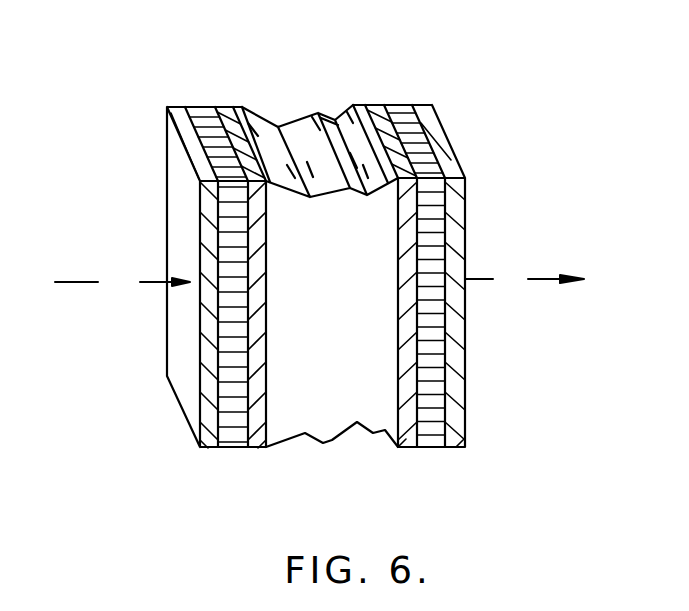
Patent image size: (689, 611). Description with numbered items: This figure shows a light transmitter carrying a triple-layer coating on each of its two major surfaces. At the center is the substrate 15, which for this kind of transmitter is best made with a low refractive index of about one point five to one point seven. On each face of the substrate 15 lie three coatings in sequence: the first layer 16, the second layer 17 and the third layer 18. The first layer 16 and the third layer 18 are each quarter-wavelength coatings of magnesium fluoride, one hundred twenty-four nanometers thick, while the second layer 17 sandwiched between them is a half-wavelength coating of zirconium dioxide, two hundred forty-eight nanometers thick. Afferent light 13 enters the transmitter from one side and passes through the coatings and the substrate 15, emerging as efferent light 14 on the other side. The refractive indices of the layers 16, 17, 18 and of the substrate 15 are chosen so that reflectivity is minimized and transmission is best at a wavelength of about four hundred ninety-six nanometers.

The afferent light 13 is at (122, 282).
The efferent light 14 is at (524, 278).
The substrate 15 is at (332, 441).
The 124 nm (or λ/4) thick layer #1 16 is at (408, 477).
The 248 nm (or λ/2) thick layer #2 17 is at (394, 104).
The 124 nm (or λ/4) thick layer #3 18 is at (458, 475).